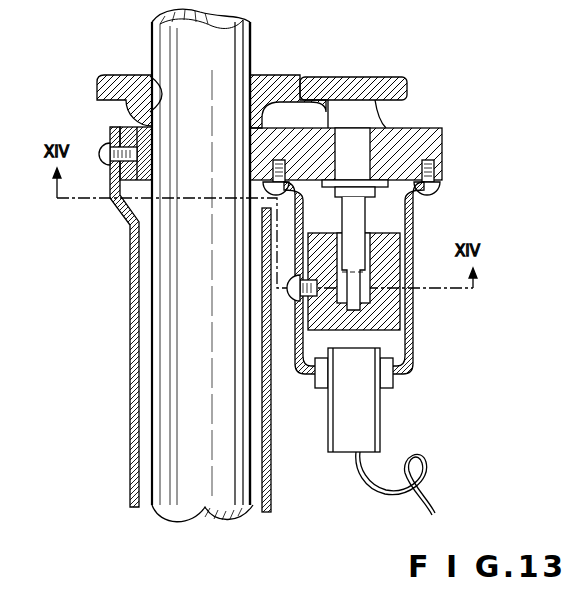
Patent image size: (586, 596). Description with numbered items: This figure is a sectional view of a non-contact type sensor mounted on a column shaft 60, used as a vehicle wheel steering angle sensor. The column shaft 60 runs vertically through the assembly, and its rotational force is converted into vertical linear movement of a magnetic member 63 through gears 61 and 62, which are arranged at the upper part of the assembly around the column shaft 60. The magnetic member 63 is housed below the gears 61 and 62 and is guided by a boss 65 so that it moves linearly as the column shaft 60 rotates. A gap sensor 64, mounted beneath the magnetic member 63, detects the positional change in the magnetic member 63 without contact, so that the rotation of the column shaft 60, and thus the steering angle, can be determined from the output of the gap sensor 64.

The column shaft 60 is at (170, 353).
The gear 61 is at (280, 80).
The gear 62 is at (370, 77).
The magnetic member 63 is at (395, 267).
The gap sensor 64 is at (375, 418).
The boss 65 is at (293, 303).